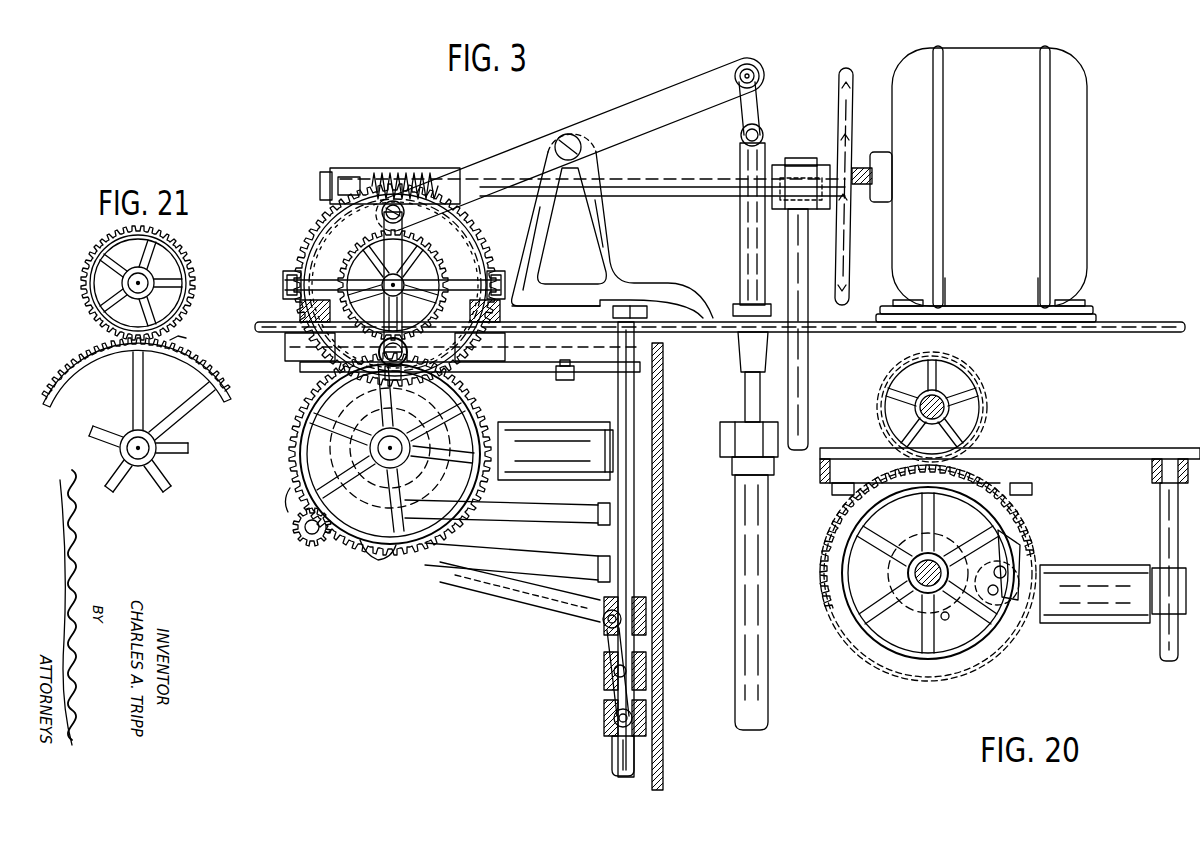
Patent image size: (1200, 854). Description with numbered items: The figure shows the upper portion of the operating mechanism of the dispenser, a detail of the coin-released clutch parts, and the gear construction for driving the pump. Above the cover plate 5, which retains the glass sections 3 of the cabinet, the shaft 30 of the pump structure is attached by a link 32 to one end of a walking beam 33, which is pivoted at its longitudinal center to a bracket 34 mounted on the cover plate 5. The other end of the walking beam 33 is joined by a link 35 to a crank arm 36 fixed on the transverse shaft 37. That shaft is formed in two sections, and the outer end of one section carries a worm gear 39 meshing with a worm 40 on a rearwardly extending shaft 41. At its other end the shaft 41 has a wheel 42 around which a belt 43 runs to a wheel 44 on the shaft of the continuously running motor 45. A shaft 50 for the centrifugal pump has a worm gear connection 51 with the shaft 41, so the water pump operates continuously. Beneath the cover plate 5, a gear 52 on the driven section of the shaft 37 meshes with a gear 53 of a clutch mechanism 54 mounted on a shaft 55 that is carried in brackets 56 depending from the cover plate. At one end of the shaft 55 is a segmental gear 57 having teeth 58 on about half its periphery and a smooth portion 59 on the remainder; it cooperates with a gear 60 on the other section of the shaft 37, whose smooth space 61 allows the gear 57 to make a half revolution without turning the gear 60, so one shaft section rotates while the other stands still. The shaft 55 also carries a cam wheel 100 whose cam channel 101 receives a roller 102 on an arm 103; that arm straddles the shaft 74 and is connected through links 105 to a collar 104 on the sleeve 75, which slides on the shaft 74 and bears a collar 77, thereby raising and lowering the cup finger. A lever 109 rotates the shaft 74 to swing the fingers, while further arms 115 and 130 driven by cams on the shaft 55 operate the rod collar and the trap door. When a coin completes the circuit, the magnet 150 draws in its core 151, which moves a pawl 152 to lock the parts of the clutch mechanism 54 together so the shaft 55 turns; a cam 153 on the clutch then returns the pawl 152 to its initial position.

In FIG. 3, the sections of glass 3 is at (664, 504).
In FIG. 3, the cover plate 5 is at (262, 323).
In FIG. 20, the cover plate 5 is at (1128, 455).
In FIG. 3, the shaft of the pump structure 30 is at (740, 600).
In FIG. 3, the link 32 is at (752, 108).
In FIG. 3, the walking beam 33 is at (658, 100).
In FIG. 3, the bracket 34 is at (618, 180).
In FIG. 3, the link 35 is at (377, 232).
In FIG. 3, the crank arm 36 is at (467, 263).
In FIG. 3, the shaft 37 is at (372, 281).
In FIG. 20, the shaft 37 is at (950, 407).
In FIG. 21, the shaft 37 is at (147, 280).
In FIG. 3, the worm gear 39 is at (337, 218).
In FIG. 3, the worm 40 is at (395, 168).
In FIG. 3, the shaft 41 is at (674, 199).
In FIG. 3, the wheel 42 is at (848, 73).
In FIG. 3, the belt 43 is at (848, 123).
In FIG. 3, the wheel 44 is at (843, 158).
In FIG. 3, the motor 45 is at (1082, 187).
In FIG. 3, the shaft 50 is at (810, 377).
In FIG. 3, the worm gear connection 51 is at (800, 172).
In FIG. 20, the gear 52 is at (985, 400).
In FIG. 20, the gear 53 is at (815, 548).
In FIG. 20, the clutch mechanism 54 is at (895, 640).
In FIG. 3, the shaft 55 is at (396, 458).
In FIG. 20, the shaft 55 is at (908, 573).
In FIG. 21, the shaft 55 is at (150, 448).
In FIG. 3, the brackets 56 is at (312, 538).
In FIG. 3, the gear 57 is at (487, 500).
In FIG. 21, the gear 57 is at (185, 418).
In FIG. 3, the teeth 58 is at (290, 406).
In FIG. 21, the teeth 58 is at (80, 348).
In FIG. 3, the smooth portion 59 is at (492, 414).
In FIG. 21, the smooth portion 59 is at (205, 365).
In FIG. 3, the gear 60 is at (440, 240).
In FIG. 21, the gear 60 is at (95, 252).
In FIG. 21, the smooth space 61 is at (176, 337).
In FIG. 3, the shaft 74 is at (636, 548).
In FIG. 3, the sleeve 75 is at (612, 756).
In FIG. 3, the collar 77 is at (602, 705).
In FIG. 3, the cam wheel 100 is at (292, 488).
In FIG. 3, the cam channel 101 is at (455, 556).
In FIG. 3, the roller 102 is at (366, 548).
In FIG. 3, the arm 103 is at (513, 590).
In FIG. 3, the collar 104 is at (605, 720).
In FIG. 3, the links 105 is at (606, 640).
In FIG. 3, the lever 109 is at (540, 383).
In FIG. 3, the arm 115 is at (507, 521).
In FIG. 3, the arm 130 is at (512, 557).
In FIG. 20, the magnet 150 is at (1095, 567).
In FIG. 20, the core 151 is at (1018, 604).
In FIG. 20, the pawl 152 is at (1020, 550).
In FIG. 20, the cam 153 is at (945, 620).